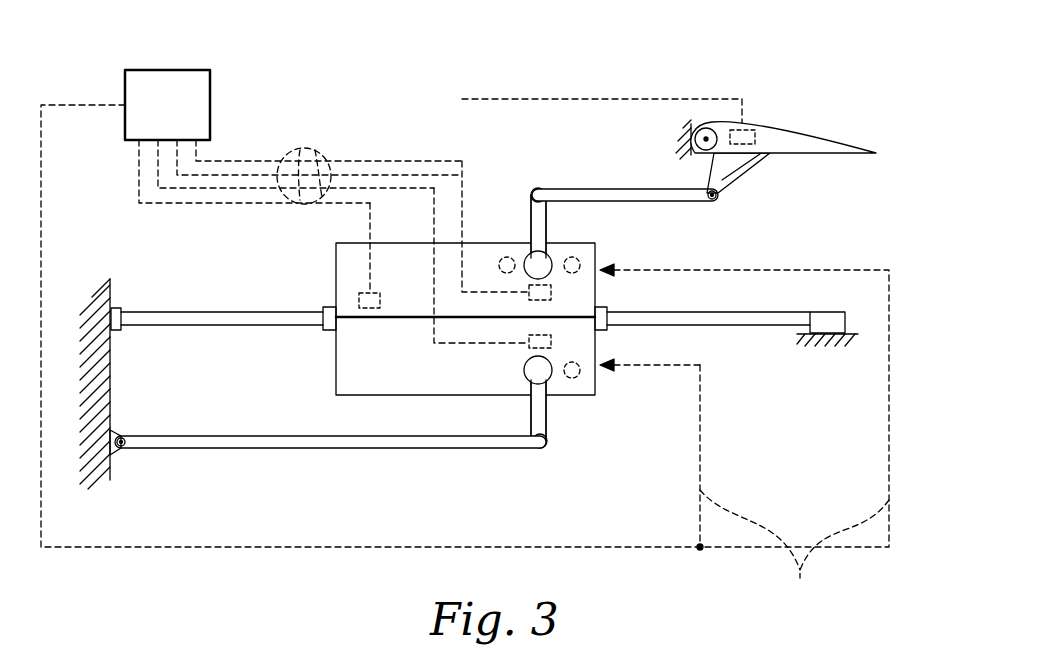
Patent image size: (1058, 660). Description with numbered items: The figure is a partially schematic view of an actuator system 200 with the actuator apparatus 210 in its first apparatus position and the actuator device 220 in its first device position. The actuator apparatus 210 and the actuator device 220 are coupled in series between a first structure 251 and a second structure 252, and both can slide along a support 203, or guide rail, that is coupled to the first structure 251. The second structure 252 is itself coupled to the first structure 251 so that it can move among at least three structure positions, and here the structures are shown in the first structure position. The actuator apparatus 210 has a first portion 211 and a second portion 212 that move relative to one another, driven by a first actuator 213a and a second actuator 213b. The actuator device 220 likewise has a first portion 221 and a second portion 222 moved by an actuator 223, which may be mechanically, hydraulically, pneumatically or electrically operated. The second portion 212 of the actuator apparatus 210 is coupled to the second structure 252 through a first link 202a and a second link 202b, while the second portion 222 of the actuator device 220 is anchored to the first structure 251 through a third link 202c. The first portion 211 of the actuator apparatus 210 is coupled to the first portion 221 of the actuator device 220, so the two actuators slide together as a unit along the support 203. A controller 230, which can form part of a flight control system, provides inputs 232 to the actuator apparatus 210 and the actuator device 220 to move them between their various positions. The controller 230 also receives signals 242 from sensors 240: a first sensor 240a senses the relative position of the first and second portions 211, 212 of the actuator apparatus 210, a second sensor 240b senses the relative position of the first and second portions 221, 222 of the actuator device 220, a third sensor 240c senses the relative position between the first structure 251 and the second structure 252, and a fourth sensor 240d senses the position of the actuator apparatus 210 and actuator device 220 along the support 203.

The actuator system 200 is at (568, 70).
The first link 202a is at (700, 201).
The second link 202b is at (752, 163).
The third link 202c is at (340, 449).
The support 203 is at (752, 327).
The actuator apparatus 210 is at (318, 274).
The first portion of the actuator apparatus 211 is at (598, 246).
The second portion of the actuator apparatus 212 is at (549, 189).
The first actuator 213a is at (505, 257).
The second actuator 213b is at (578, 257).
The actuator device 220 is at (318, 370).
The first portion of the actuator device 221 is at (578, 396).
The second portion of the actuator device 222 is at (549, 410).
The actuator 223 is at (580, 377).
The controller 230 is at (186, 70).
The inputs 232 is at (465, 353).
The sensors 240 is at (857, 203).
The first sensor 240a is at (551, 291).
The second sensor 240b is at (529, 345).
The third sensor 240c is at (768, 126).
The fourth sensor 240d is at (376, 292).
The signals 242 is at (300, 156).
The first structure 251 is at (98, 468).
The second structure 252 is at (822, 130).